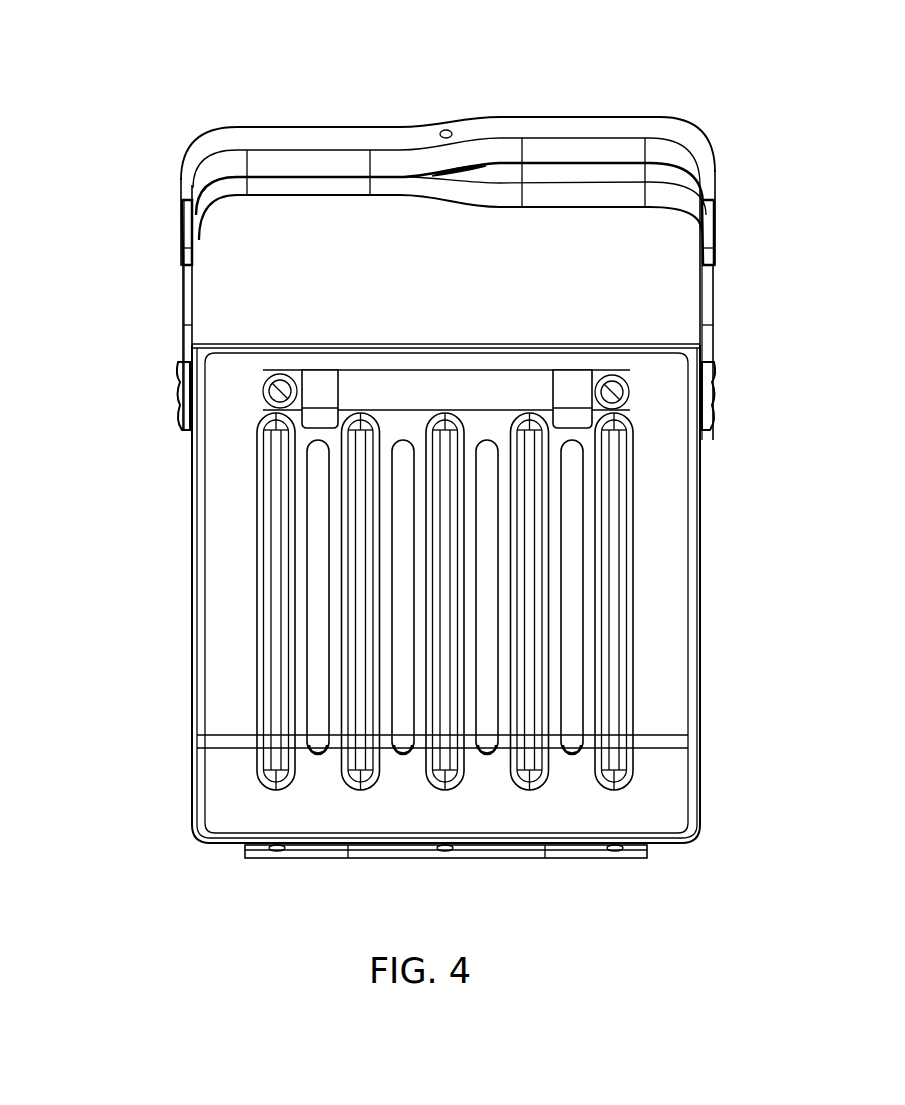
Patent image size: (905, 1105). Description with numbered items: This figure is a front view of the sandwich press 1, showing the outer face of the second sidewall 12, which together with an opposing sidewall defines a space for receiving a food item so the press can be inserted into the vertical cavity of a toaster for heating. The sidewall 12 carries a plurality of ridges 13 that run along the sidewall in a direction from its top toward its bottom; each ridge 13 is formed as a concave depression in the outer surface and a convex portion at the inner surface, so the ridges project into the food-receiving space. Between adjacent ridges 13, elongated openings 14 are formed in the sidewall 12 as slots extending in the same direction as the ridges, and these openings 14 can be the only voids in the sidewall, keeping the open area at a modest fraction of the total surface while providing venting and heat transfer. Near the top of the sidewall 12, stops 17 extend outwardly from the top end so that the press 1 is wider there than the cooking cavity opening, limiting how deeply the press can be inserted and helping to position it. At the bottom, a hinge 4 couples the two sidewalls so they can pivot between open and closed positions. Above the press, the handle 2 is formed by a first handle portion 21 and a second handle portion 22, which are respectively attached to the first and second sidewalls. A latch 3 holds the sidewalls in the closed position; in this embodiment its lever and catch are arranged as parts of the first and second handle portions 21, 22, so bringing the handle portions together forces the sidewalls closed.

The sandwich press 1 is at (98, 88).
The handle 2 is at (676, 80).
The latch 3 is at (150, 392).
The hinge 4 is at (277, 852).
The second sidewall 12 is at (652, 620).
The ridges 13 is at (612, 723).
The openings 14 is at (572, 517).
The stops 17 is at (313, 393).
The first handle portion 21 is at (585, 195).
The second handle portion 22 is at (680, 131).